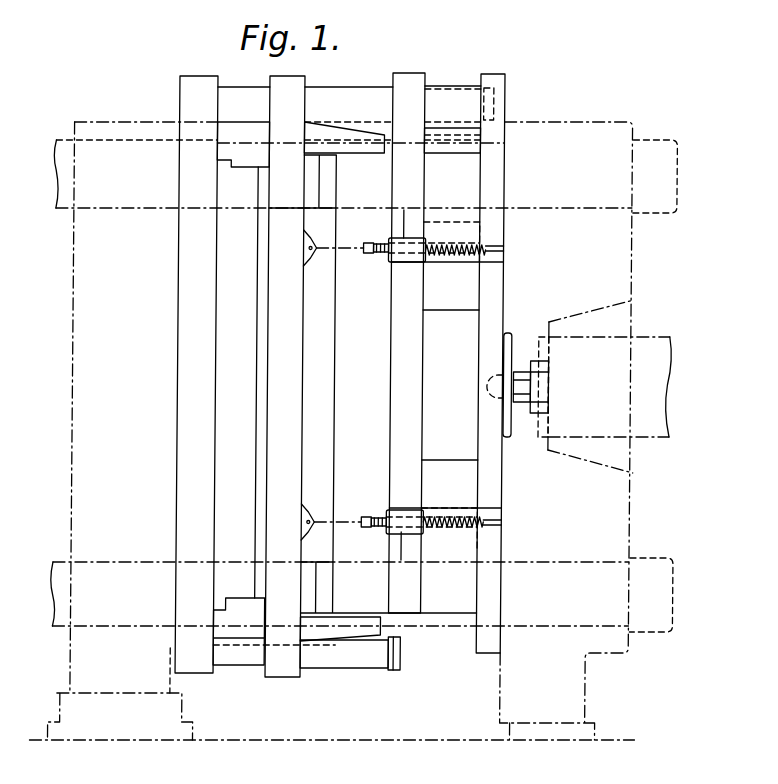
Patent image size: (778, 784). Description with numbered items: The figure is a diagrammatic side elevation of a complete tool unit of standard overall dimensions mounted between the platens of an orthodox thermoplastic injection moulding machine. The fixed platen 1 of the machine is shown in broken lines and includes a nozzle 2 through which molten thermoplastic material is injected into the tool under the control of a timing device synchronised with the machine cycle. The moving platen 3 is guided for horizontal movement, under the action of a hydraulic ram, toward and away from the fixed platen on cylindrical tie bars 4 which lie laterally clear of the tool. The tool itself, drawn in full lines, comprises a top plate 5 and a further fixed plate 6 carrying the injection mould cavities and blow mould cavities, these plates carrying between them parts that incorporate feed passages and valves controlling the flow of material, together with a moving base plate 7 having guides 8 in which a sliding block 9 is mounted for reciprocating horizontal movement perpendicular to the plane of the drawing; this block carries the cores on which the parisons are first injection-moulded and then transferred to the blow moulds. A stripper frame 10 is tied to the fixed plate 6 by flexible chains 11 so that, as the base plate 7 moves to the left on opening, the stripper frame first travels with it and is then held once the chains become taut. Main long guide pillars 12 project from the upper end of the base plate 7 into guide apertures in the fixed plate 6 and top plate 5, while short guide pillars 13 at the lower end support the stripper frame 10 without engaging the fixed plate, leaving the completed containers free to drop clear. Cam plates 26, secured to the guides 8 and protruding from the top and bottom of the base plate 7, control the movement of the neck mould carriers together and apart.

The fixed platen 1 is at (518, 670).
The nozzle 2 is at (523, 375).
The moving platen 3 is at (165, 689).
The tie bars 4 is at (124, 150).
The top plate 5 is at (505, 128).
The fixed plate 6 is at (416, 105).
The moving base plate 7 is at (188, 232).
The guides 8 is at (241, 143).
The sliding block 9 is at (233, 300).
The stripper frame 10 is at (291, 659).
The flexible chains 11 is at (367, 252).
The main long guide pillars 12 is at (360, 101).
The short guide pillars 13 is at (362, 656).
The cam plates 26 is at (361, 138).